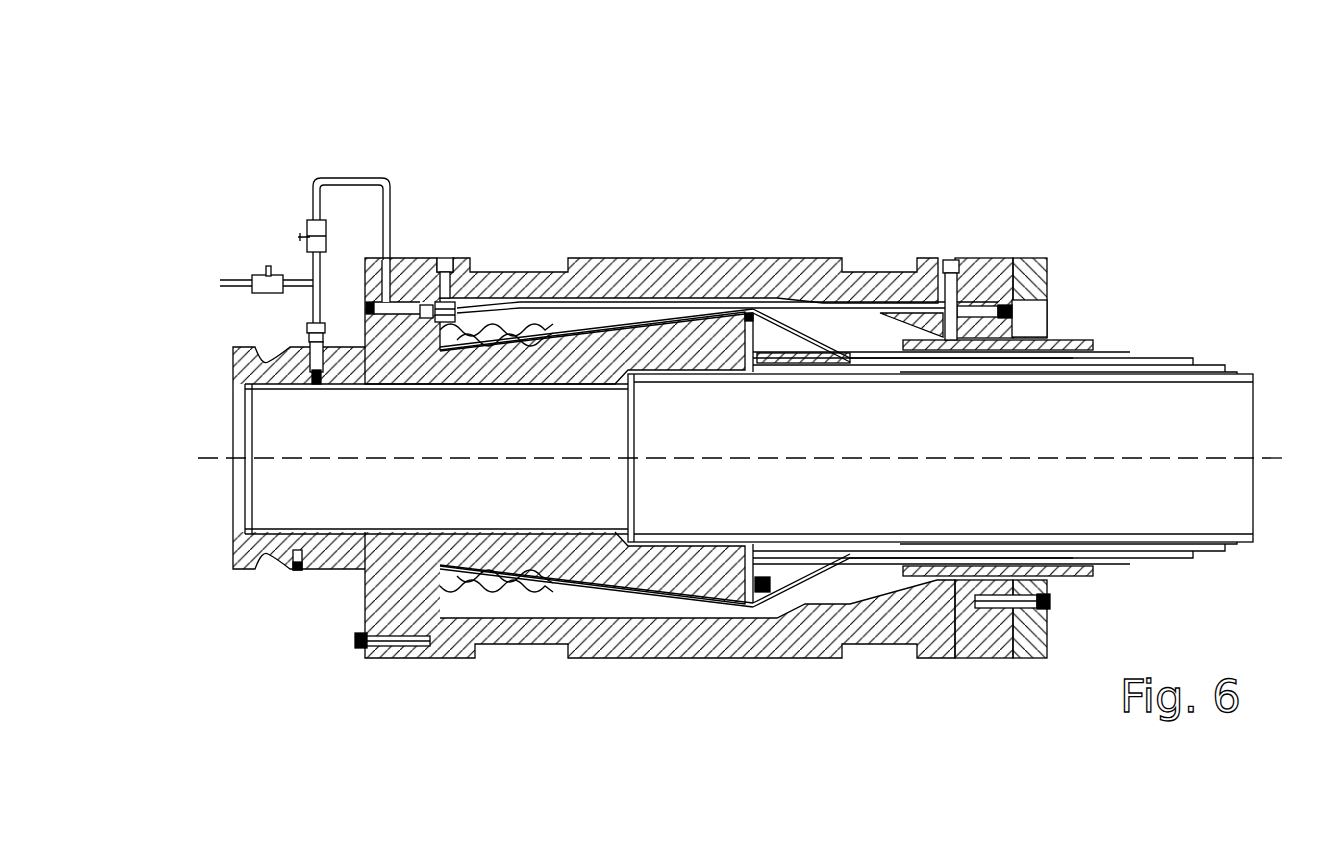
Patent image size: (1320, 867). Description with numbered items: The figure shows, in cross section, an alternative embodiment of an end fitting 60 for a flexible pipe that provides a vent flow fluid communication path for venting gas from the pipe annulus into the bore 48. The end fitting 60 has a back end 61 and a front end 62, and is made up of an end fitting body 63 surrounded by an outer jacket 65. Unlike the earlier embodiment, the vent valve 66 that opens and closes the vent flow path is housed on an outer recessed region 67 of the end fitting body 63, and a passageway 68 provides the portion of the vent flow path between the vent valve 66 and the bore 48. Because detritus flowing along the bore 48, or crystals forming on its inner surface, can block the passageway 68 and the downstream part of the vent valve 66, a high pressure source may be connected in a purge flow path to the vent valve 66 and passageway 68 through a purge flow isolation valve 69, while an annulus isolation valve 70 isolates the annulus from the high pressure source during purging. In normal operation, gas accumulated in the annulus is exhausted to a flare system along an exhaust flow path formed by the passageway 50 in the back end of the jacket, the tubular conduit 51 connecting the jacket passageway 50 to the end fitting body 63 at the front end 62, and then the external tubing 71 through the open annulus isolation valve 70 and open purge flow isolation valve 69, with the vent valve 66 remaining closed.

The bore 48 is at (778, 445).
The passageway 50 is at (935, 300).
The tubular conduit 51 is at (641, 300).
The end fitting 60 is at (607, 137).
The back end 61 is at (927, 151).
The front end 62 is at (250, 190).
The end fitting body 63 is at (366, 590).
The outer jacket 65 is at (790, 640).
The vent valve 66 is at (307, 334).
The outer recessed region 67 is at (300, 357).
The passageway 68 is at (321, 380).
The purge flow isolation valve 69 is at (266, 270).
The annulus isolation valve 70 is at (307, 232).
The external tubing 71 is at (386, 180).